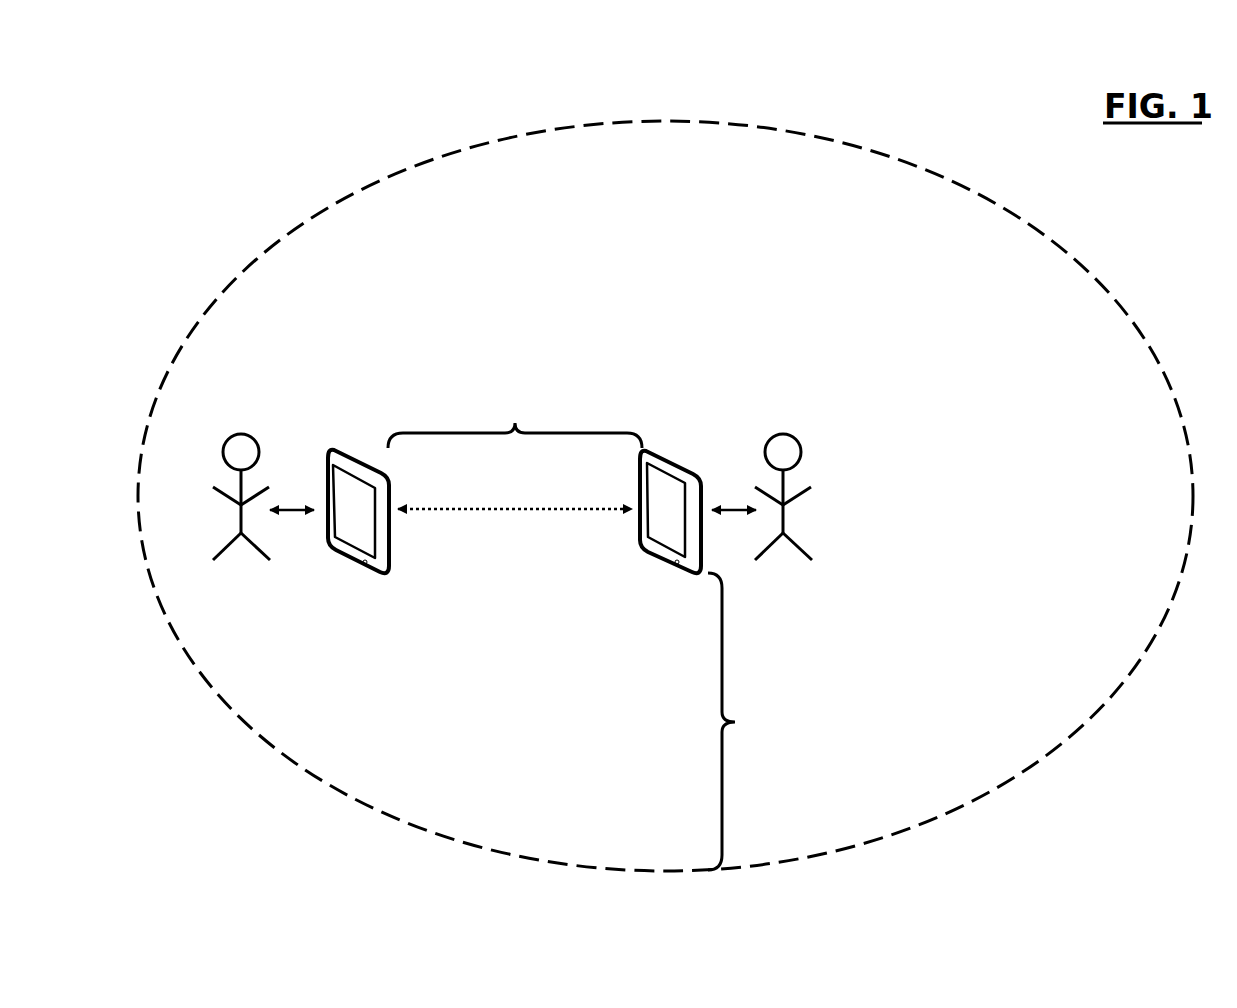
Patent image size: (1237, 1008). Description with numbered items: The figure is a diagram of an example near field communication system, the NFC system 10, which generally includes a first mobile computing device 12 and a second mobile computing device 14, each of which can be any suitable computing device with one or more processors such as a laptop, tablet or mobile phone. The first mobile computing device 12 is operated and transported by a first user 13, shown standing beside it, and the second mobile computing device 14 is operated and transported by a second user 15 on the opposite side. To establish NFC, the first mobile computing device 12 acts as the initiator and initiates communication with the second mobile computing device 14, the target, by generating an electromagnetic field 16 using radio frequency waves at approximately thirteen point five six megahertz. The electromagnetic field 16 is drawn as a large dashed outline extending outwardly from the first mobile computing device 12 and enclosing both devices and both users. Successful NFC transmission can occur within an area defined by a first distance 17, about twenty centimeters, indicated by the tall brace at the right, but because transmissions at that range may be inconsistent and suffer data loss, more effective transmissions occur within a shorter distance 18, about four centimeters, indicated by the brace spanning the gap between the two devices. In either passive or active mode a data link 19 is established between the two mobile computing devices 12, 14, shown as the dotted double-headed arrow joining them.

The NFC system 10 is at (244, 103).
The first mobile computing device 12 is at (360, 455).
The first user 13 is at (259, 582).
The second mobile computing device 14 is at (674, 455).
The second user 15 is at (804, 414).
The electromagnetic field 16 is at (676, 120).
The first distance 17 is at (742, 721).
The shorter distance 18 is at (515, 422).
The data link 19 is at (518, 512).